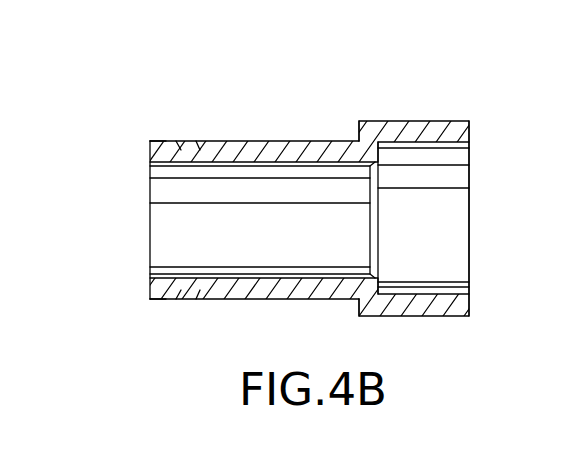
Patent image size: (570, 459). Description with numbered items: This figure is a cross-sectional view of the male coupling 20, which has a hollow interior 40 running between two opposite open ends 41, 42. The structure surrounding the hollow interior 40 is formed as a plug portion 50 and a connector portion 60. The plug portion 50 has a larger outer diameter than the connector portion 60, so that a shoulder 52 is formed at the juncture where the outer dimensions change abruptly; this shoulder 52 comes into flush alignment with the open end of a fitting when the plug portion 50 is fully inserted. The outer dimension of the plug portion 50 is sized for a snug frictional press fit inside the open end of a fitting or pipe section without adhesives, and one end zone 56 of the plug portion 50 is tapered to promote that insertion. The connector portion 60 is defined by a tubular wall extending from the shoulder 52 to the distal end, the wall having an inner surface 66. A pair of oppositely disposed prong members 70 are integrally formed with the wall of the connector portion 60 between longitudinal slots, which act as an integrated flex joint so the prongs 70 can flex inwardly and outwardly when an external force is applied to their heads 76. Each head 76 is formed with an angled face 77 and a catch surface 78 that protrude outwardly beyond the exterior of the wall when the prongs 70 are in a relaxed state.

The male coupling 20 is at (253, 130).
The hollow interior 40 is at (252, 236).
The open end 41 is at (471, 216).
The open end 42 is at (148, 232).
The plug portion 50 is at (440, 120).
The shoulder 52 is at (357, 126).
The end zone 56 is at (470, 128).
The connector portion 60 is at (230, 139).
The inner surface 66 is at (183, 190).
The prong members 70 is at (221, 302).
The heads 76 is at (184, 140).
The angled face 77 is at (168, 138).
The catch surface 78 is at (197, 139).